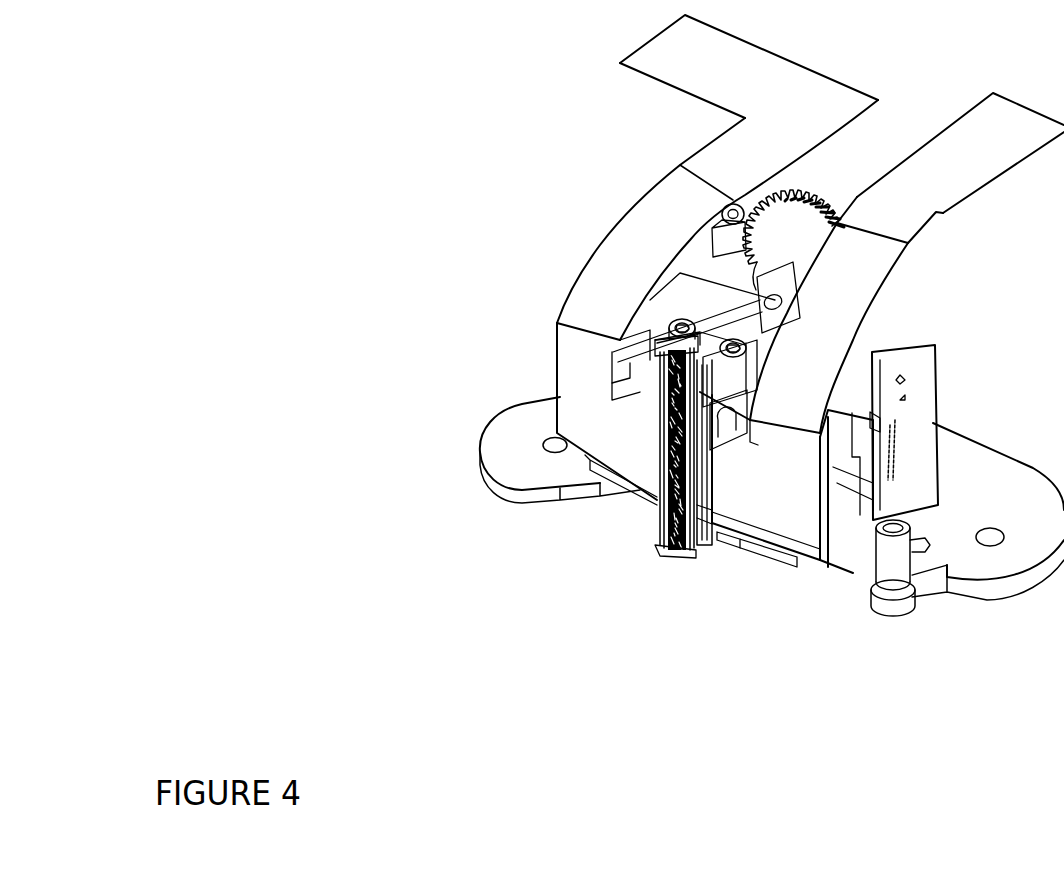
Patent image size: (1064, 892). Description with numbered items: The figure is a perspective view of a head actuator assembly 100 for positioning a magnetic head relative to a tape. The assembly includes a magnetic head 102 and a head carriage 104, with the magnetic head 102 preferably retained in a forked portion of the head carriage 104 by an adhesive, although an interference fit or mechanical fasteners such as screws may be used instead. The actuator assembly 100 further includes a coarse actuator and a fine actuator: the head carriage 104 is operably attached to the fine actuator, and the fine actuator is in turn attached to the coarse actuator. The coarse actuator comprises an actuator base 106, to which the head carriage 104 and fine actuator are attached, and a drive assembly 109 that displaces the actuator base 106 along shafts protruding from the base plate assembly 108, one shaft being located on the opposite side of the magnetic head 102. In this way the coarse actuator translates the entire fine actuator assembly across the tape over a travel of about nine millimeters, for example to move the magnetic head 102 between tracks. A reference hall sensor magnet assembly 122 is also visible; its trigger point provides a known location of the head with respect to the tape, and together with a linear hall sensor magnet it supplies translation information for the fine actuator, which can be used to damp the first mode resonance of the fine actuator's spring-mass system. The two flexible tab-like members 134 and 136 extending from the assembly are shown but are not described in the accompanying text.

The head actuator assembly 100 is at (517, 203).
The magnetic head 102 is at (640, 548).
The head carriage 104 is at (701, 538).
The actuator base 106 is at (904, 432).
The base plate assembly 108 is at (539, 462).
The drive assembly 109 is at (840, 177).
The reference hall sensor magnet assembly 122 is at (858, 575).
The flex circuit tab 134 is at (724, 84).
The flex circuit tab 136 is at (907, 269).